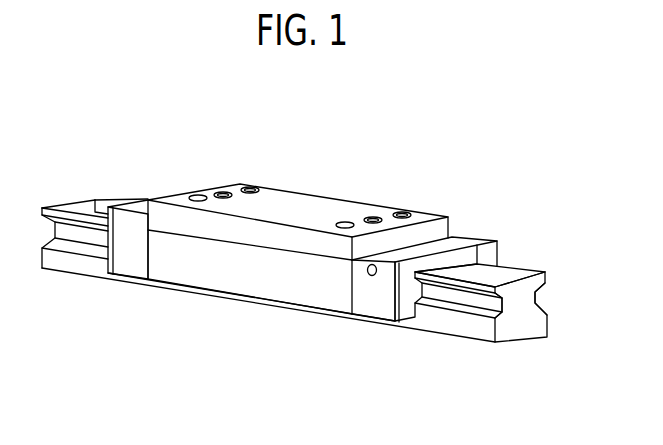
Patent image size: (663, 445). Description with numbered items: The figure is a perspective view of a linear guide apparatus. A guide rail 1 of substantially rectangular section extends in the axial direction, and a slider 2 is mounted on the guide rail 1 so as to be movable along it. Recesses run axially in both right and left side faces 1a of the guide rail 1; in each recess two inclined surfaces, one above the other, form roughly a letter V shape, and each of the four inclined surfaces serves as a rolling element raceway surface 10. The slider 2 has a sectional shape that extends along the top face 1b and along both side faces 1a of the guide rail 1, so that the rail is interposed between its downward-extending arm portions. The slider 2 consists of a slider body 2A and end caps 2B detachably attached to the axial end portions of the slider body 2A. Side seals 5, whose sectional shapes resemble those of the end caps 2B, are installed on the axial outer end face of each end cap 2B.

The guide rail 1 is at (318, 298).
The side faces 1a is at (462, 334).
The top face 1b is at (512, 278).
The rolling element raceway surface 10 is at (550, 292).
The slider 2 is at (302, 204).
The slider body 2A is at (287, 207).
The end caps 2B is at (142, 198).
The side seals 5 is at (97, 200).